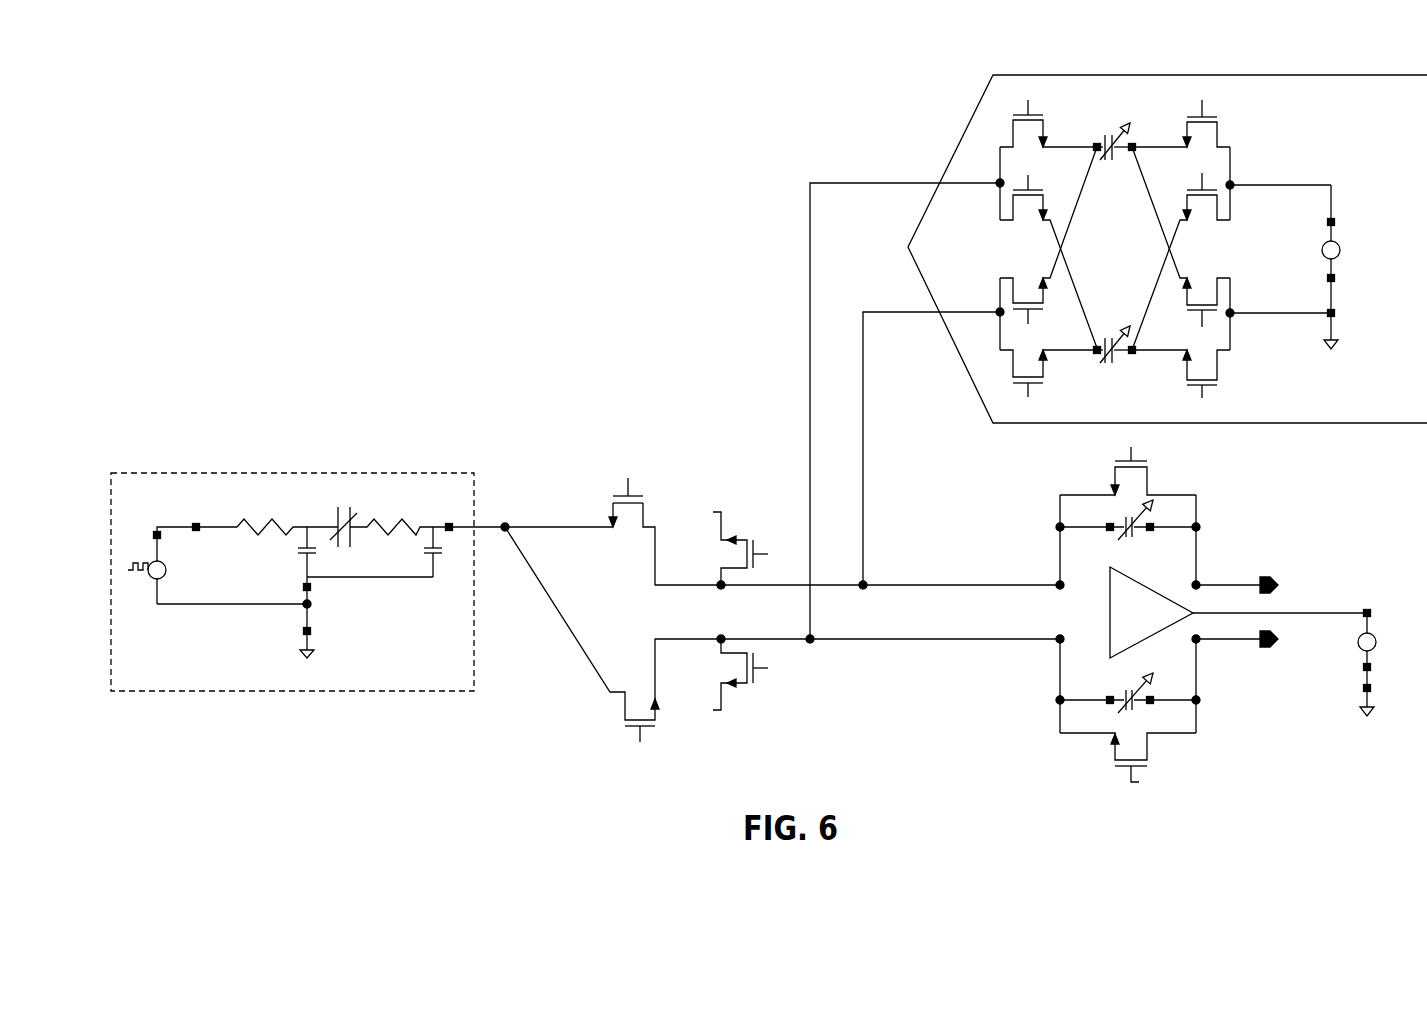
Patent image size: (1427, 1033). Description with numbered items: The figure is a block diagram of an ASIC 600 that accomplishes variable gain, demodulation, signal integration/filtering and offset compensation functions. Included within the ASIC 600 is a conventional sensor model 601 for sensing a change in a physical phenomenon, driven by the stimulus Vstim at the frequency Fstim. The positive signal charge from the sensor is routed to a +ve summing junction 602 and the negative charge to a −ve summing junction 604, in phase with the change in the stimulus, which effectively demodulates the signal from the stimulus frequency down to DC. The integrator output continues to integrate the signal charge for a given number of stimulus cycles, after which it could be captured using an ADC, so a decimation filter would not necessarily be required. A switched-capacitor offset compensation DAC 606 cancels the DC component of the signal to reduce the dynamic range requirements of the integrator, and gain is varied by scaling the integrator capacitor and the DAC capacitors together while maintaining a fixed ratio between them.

The ASIC 600 is at (210, 130).
The sensor model 601 is at (163, 473).
The +ve summing junction 602 is at (1060, 639).
The −ve summing junction 604 is at (1060, 585).
The switched-capacitor offset compensation DAC 606 is at (1367, 75).